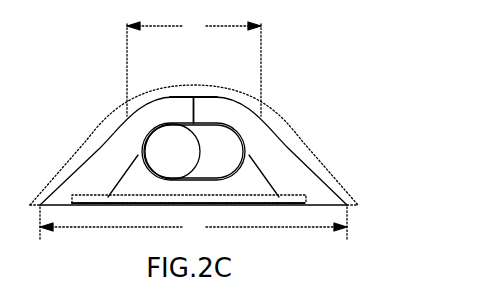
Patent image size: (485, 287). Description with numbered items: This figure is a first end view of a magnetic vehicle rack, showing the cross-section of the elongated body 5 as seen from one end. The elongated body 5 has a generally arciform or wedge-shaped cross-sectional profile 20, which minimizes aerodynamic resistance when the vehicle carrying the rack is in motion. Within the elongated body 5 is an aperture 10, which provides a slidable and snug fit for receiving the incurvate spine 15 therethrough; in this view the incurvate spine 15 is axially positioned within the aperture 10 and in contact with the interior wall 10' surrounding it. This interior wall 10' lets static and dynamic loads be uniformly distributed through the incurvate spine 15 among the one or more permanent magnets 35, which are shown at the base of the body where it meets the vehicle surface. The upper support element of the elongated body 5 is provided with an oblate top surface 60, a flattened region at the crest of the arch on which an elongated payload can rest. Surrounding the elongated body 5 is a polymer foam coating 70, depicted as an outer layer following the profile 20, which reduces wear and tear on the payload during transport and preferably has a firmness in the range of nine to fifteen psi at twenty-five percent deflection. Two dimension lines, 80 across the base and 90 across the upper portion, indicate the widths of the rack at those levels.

The elongated body 5 is at (103, 171).
The aperture 10 is at (248, 151).
The interior wall 10' is at (136, 139).
The incurvate spine 15 is at (159, 161).
The arciform cross-sectional profile 20 is at (280, 115).
The permanent magnet 35 is at (312, 202).
The oblate top surface 60 is at (192, 87).
The polymer foam coating 70 is at (139, 102).
The base width 80 is at (193, 223).
The top width 90 is at (194, 66).